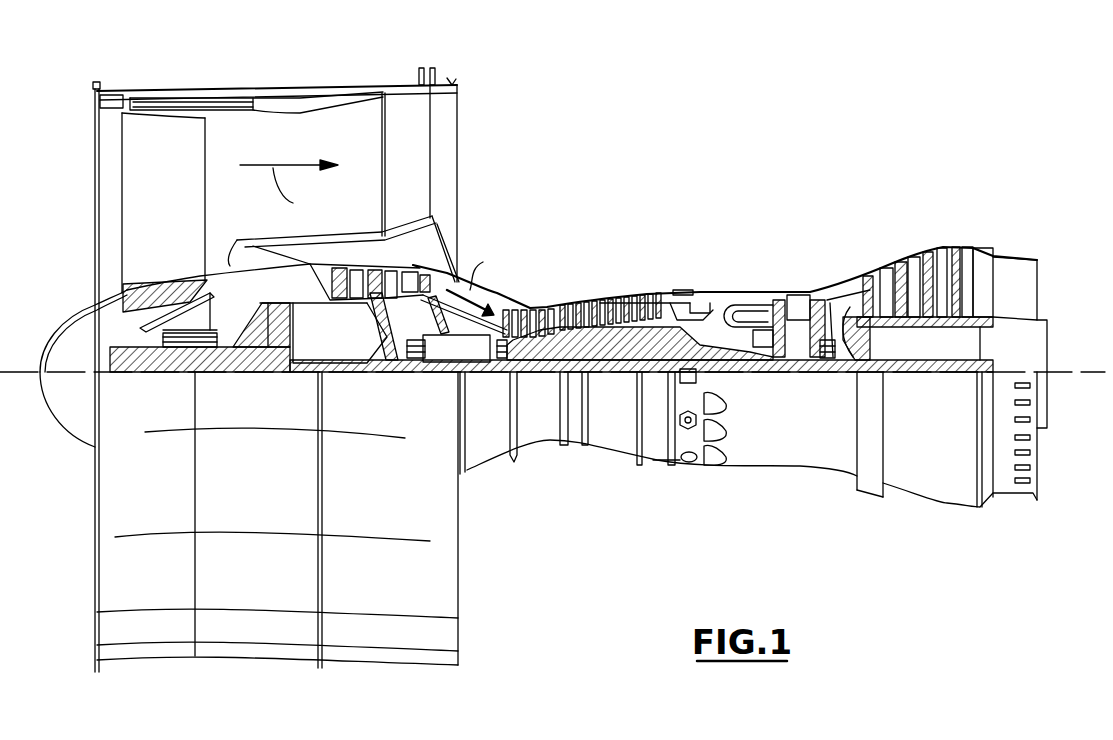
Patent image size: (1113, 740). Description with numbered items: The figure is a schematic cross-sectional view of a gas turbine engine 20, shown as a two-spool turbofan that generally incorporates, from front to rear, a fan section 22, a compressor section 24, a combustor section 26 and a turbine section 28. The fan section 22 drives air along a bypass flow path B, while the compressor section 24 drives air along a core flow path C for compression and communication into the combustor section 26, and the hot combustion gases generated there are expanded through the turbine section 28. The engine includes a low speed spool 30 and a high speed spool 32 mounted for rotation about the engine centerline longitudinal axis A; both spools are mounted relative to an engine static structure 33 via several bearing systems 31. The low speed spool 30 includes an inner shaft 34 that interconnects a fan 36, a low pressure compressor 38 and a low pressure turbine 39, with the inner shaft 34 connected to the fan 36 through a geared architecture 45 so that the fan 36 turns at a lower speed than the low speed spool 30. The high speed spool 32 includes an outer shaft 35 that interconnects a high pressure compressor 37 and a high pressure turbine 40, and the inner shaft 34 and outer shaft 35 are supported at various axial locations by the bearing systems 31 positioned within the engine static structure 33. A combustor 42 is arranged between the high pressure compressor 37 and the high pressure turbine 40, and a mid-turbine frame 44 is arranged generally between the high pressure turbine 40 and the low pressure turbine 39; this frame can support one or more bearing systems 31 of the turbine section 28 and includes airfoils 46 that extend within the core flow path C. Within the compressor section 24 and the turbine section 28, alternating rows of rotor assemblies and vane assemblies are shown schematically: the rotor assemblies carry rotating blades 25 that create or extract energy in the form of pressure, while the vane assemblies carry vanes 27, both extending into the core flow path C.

The gas turbine engine 20 is at (733, 137).
The fan section 22 is at (199, 82).
The compressor section 24 is at (504, 286).
The blades 25 is at (340, 270).
The combustor section 26 is at (730, 276).
The vanes 27 is at (358, 268).
The turbine section 28 is at (875, 239).
The low speed spool 30 is at (613, 376).
The bearing systems 31 is at (191, 340).
The high speed spool 32 is at (660, 340).
The engine static structure 33 is at (655, 383).
The inner shaft 34 is at (473, 373).
The outer shaft 35 is at (742, 373).
The fan 36 is at (176, 219).
The high pressure compressor 37 is at (608, 305).
The low pressure compressor 38 is at (393, 272).
The low pressure turbine 39 is at (919, 265).
The high pressure turbine 40 is at (800, 300).
The combustor 42 is at (727, 306).
The mid-turbine frame 44 is at (833, 290).
The geared architecture 45 is at (280, 343).
The airfoils 46 is at (870, 340).